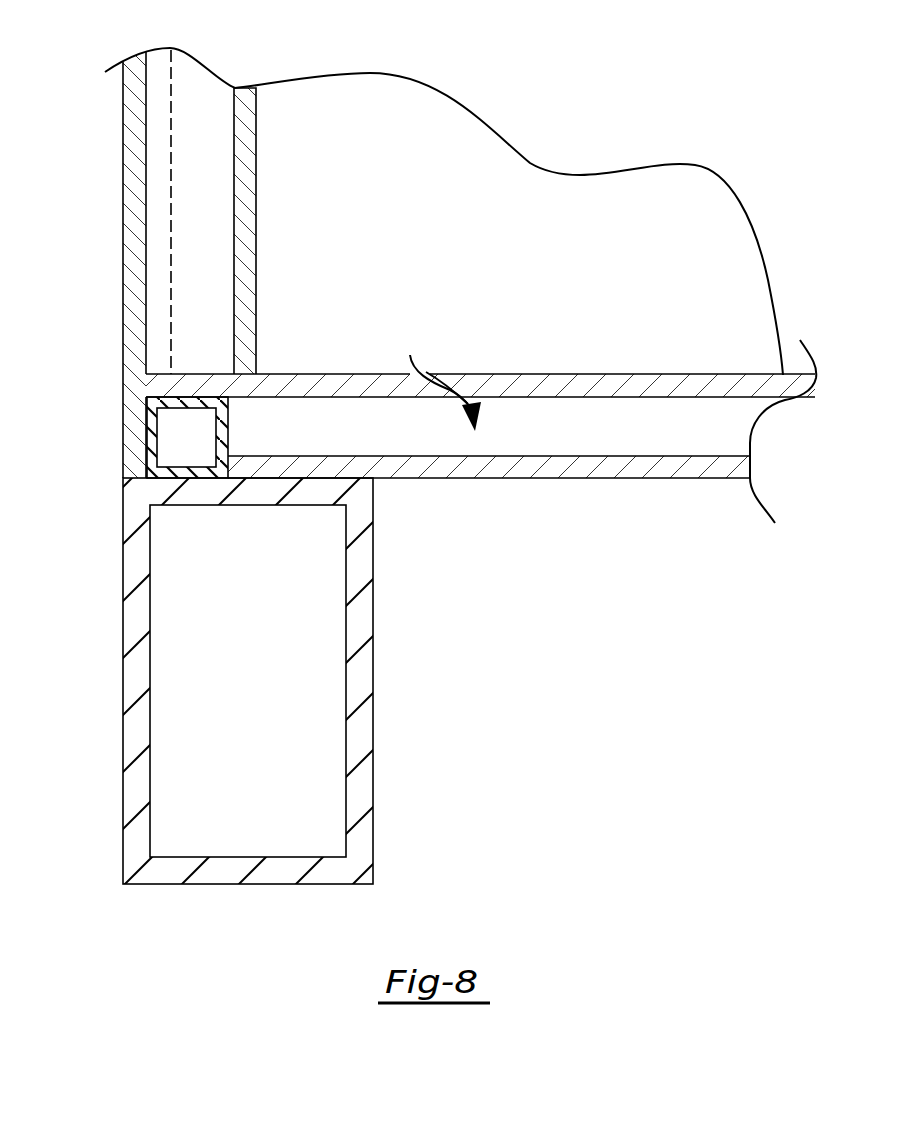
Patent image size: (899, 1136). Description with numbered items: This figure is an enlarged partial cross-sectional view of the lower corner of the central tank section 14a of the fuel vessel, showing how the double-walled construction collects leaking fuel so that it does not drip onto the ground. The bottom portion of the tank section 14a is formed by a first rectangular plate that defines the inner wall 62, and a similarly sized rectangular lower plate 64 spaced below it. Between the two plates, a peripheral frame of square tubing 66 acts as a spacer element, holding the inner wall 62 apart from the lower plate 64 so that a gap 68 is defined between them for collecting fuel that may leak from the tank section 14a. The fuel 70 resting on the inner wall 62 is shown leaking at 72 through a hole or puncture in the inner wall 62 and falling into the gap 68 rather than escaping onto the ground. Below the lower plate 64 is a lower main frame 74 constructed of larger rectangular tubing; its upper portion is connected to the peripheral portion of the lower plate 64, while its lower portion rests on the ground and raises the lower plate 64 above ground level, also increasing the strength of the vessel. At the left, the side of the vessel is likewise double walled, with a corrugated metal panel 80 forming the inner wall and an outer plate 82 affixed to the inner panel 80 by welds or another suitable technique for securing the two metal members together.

The central tank section 14a is at (528, 130).
The inner wall 62 is at (733, 375).
The lower plate 64 is at (697, 470).
The square tubing 66 is at (155, 437).
The gap 68 is at (628, 437).
The fuel 70 is at (648, 188).
The leak location 72 is at (437, 386).
The lower main frame 74 is at (128, 618).
The corrugated metal panel 80 is at (256, 125).
The outer plate 82 is at (123, 137).